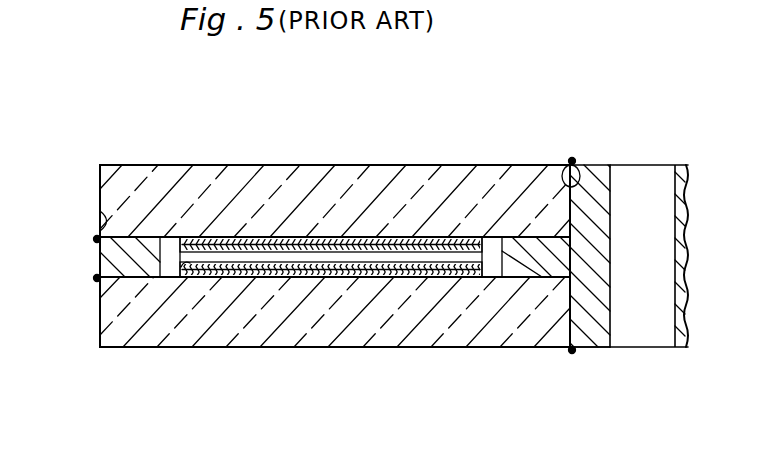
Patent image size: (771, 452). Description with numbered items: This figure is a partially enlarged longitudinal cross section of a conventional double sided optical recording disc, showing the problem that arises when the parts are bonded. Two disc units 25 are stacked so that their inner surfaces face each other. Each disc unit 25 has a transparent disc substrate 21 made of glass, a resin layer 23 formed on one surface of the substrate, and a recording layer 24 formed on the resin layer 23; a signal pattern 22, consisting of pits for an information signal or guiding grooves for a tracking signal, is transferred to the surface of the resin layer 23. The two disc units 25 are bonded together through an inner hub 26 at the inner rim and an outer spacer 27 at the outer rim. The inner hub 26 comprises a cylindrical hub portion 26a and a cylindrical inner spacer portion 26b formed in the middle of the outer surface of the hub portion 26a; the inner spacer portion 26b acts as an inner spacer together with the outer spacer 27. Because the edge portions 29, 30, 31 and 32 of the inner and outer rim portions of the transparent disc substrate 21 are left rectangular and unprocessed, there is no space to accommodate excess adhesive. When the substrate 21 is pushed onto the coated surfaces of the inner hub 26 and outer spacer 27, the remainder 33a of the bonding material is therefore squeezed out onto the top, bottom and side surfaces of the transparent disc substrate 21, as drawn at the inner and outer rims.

The transparent disc substrate 21 is at (315, 175).
The signal pattern 22 is at (432, 240).
The resin layer 23 is at (463, 245).
The recording layer 24 is at (488, 250).
The disc unit 25 is at (212, 165).
The inner hub 26 is at (612, 292).
The cylindrical hub portion 26a is at (593, 328).
The cylindrical inner spacer portion 26b is at (530, 265).
The outer spacer 27 is at (100, 262).
The edge portion 29 is at (568, 238).
The edge portion 30 is at (583, 180).
The edge portion 31 is at (100, 213).
The edge portion 32 is at (100, 163).
The remainder of bonding material 33a is at (573, 158).